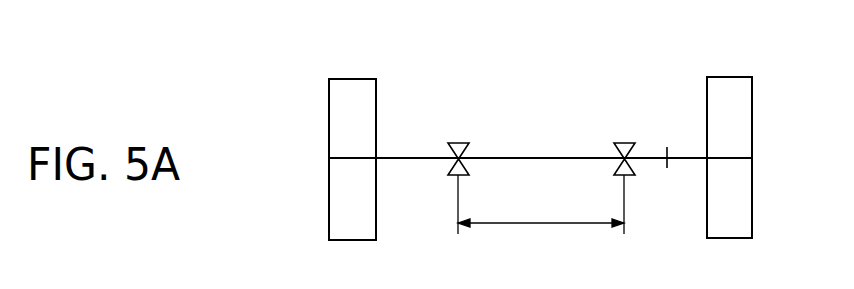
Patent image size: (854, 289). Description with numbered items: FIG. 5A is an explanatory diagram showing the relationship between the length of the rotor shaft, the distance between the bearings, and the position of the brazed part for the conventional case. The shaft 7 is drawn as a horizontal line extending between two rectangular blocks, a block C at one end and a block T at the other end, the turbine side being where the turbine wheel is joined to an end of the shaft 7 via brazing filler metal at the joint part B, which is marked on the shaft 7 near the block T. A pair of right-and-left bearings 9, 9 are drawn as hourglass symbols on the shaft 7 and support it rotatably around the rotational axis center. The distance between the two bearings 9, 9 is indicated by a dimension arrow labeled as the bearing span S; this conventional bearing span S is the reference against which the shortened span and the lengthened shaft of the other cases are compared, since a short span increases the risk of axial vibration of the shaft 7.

The compressor wheel C is at (352, 144).
The turbine wheel T is at (729, 142).
The shaft 7 is at (536, 156).
The bearings 9 is at (459, 143).
The joint part B is at (670, 140).
The bearing span S is at (545, 220).